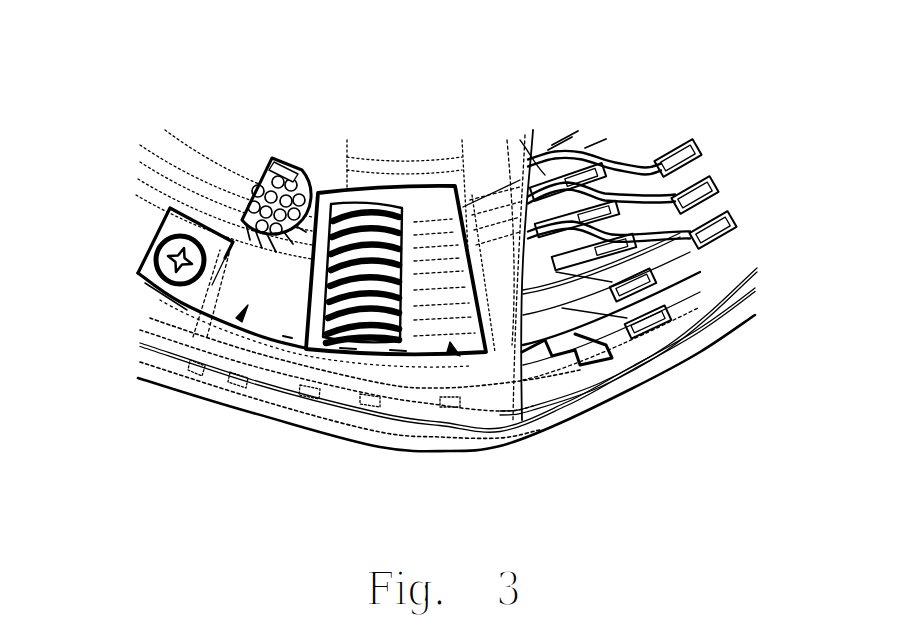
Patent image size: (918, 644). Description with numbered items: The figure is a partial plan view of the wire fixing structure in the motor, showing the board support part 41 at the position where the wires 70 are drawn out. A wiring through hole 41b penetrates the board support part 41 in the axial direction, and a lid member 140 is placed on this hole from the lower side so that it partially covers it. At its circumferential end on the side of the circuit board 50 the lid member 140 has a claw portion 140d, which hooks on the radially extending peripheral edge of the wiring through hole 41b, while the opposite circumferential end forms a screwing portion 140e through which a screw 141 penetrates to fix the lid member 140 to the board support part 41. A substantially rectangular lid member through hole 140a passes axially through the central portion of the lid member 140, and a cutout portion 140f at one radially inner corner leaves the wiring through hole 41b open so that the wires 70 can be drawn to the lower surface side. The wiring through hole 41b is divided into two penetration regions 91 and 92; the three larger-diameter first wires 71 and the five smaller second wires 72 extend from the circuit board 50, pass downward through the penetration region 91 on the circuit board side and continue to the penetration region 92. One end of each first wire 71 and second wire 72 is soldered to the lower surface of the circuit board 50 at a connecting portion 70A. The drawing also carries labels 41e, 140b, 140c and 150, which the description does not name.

The board support part 41 is at (192, 148).
The wiring through hole 41b is at (283, 162).
The housing vent portion 41e is at (280, 143).
The circuit board 50 is at (700, 288).
The wire 70 is at (528, 253).
The connecting portion 70A is at (696, 152).
The first wire 71 is at (604, 152).
The second wire 72 is at (540, 255).
The penetration region 91 is at (457, 415).
The penetration region 92 is at (207, 372).
The lid member 140 is at (305, 339).
The lid member through hole 140a is at (347, 332).
The housing wall portion 140b is at (397, 332).
The housing wall portion 140c is at (288, 330).
The claw portion 140d is at (503, 370).
The screwing portion 140e is at (182, 298).
The cutout portion 140f is at (240, 218).
The screw 141 is at (165, 258).
The heater 150 is at (365, 210).